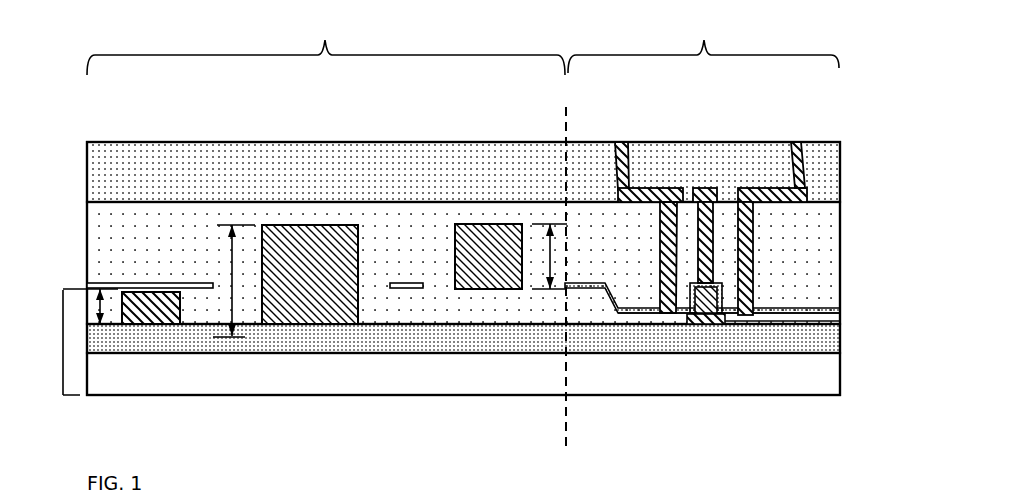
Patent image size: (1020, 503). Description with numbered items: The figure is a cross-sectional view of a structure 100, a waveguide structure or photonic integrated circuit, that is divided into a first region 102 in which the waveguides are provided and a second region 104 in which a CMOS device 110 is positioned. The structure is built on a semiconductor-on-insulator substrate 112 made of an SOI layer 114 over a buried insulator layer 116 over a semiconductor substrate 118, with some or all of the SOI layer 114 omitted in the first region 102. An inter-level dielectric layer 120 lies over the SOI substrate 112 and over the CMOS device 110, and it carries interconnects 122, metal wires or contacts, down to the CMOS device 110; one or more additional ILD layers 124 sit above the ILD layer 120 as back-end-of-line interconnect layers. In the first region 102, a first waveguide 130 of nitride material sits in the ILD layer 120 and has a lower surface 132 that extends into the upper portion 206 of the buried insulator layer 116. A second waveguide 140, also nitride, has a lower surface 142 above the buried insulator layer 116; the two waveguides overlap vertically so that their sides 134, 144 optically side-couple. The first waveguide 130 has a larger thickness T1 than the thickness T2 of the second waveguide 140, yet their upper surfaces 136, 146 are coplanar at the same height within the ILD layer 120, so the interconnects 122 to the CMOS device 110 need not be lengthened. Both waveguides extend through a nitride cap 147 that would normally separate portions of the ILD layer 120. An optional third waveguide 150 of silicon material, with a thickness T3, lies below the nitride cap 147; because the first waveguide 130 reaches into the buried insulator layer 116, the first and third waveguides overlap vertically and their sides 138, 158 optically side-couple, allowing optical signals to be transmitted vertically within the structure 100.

The structure 100 is at (840, 133).
The first region 102 is at (326, 42).
The second region 104 is at (703, 41).
The CMOS device 110 is at (736, 283).
The semiconductor-on-insulator substrate 112 is at (63, 343).
The semiconductor-on-insulator layer 114 is at (818, 318).
The buried insulator layer 116 is at (818, 337).
The semiconductor substrate 118 is at (818, 378).
The inter-level dielectric layer 120 is at (105, 253).
The interconnects 122 is at (797, 183).
The additional ILD layer 124 is at (108, 168).
The first waveguide 130 is at (258, 213).
The lower surface 132 is at (320, 337).
The side 134 is at (352, 240).
The upper surface 136 is at (303, 224).
The side 138 is at (250, 283).
The second waveguide 140 is at (513, 214).
The lower surface 142 is at (493, 290).
The side 144 is at (453, 247).
The upper surface 146 is at (488, 223).
The nitride cap 147 is at (403, 282).
The third waveguide 150 is at (154, 336).
The side 158 is at (182, 305).
The upper portion 206 is at (390, 323).
The thickness T1 is at (233, 258).
The thickness T2 is at (568, 262).
The thickness T3 is at (124, 330).